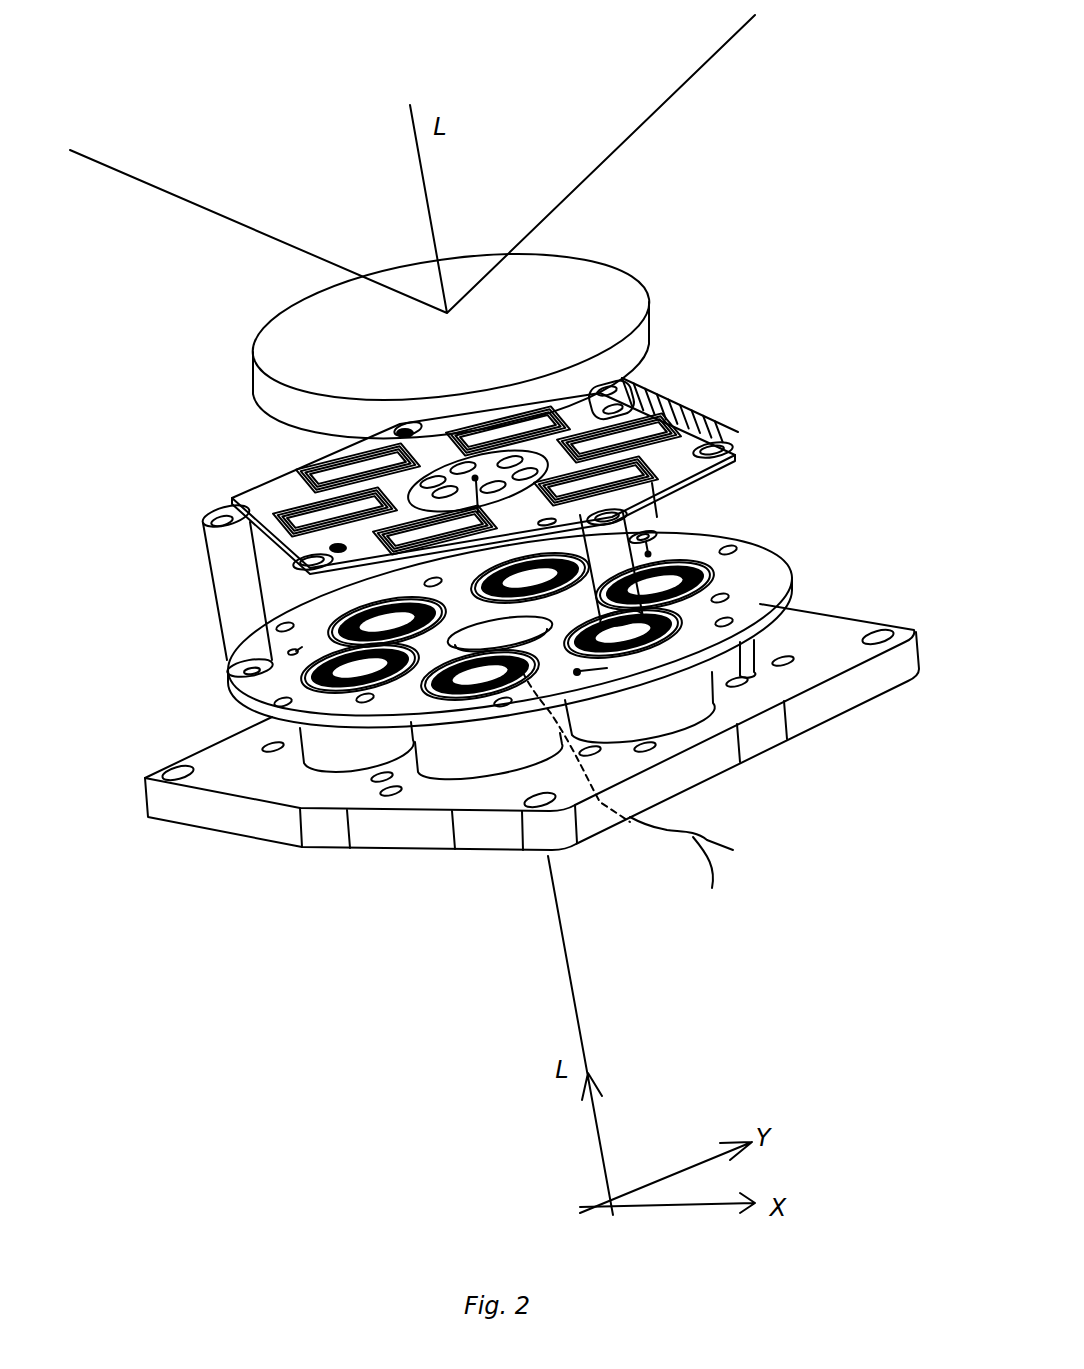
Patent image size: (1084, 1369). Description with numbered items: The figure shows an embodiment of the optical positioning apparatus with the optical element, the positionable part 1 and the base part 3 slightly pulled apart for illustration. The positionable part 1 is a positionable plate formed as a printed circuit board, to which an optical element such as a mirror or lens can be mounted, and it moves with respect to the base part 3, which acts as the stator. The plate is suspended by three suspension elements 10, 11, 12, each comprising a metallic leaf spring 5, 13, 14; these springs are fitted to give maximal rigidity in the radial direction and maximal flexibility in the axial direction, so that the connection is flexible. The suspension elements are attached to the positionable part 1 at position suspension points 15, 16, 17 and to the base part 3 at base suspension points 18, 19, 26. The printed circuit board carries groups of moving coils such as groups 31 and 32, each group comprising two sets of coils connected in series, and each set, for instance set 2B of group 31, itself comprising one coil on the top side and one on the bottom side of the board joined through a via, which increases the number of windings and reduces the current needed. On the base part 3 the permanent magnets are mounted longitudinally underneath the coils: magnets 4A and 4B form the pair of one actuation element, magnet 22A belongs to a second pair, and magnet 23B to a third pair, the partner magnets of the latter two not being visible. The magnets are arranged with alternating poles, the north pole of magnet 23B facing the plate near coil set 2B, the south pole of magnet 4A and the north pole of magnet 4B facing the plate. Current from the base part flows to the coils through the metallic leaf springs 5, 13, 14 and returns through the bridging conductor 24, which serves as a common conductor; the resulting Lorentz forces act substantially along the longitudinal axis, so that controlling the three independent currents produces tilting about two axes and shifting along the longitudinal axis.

The positionable part 1 is at (484, 451).
The set of moving coils 2B is at (657, 432).
The base part 3 is at (205, 814).
The magnet 4A is at (647, 715).
The magnet 4B is at (455, 765).
The metallic leaf spring 5 is at (724, 403).
The suspension element 10 is at (690, 392).
The suspension element 11 is at (496, 652).
The suspension element 12 is at (300, 452).
The metallic leaf spring 13 is at (318, 562).
The metallic leaf spring 14 is at (232, 503).
The position suspension point 15 is at (714, 452).
The position suspension point 16 is at (300, 560).
The position suspension point 17 is at (408, 428).
The base suspension point 18 is at (648, 537).
The base suspension point 19 is at (612, 668).
The magnet 22A is at (333, 757).
The magnet 23B is at (742, 655).
The bridging conductor 24 is at (681, 868).
The base suspension point 26 is at (260, 672).
The group of moving coils 31 is at (508, 418).
The group of moving coils 32 is at (640, 469).